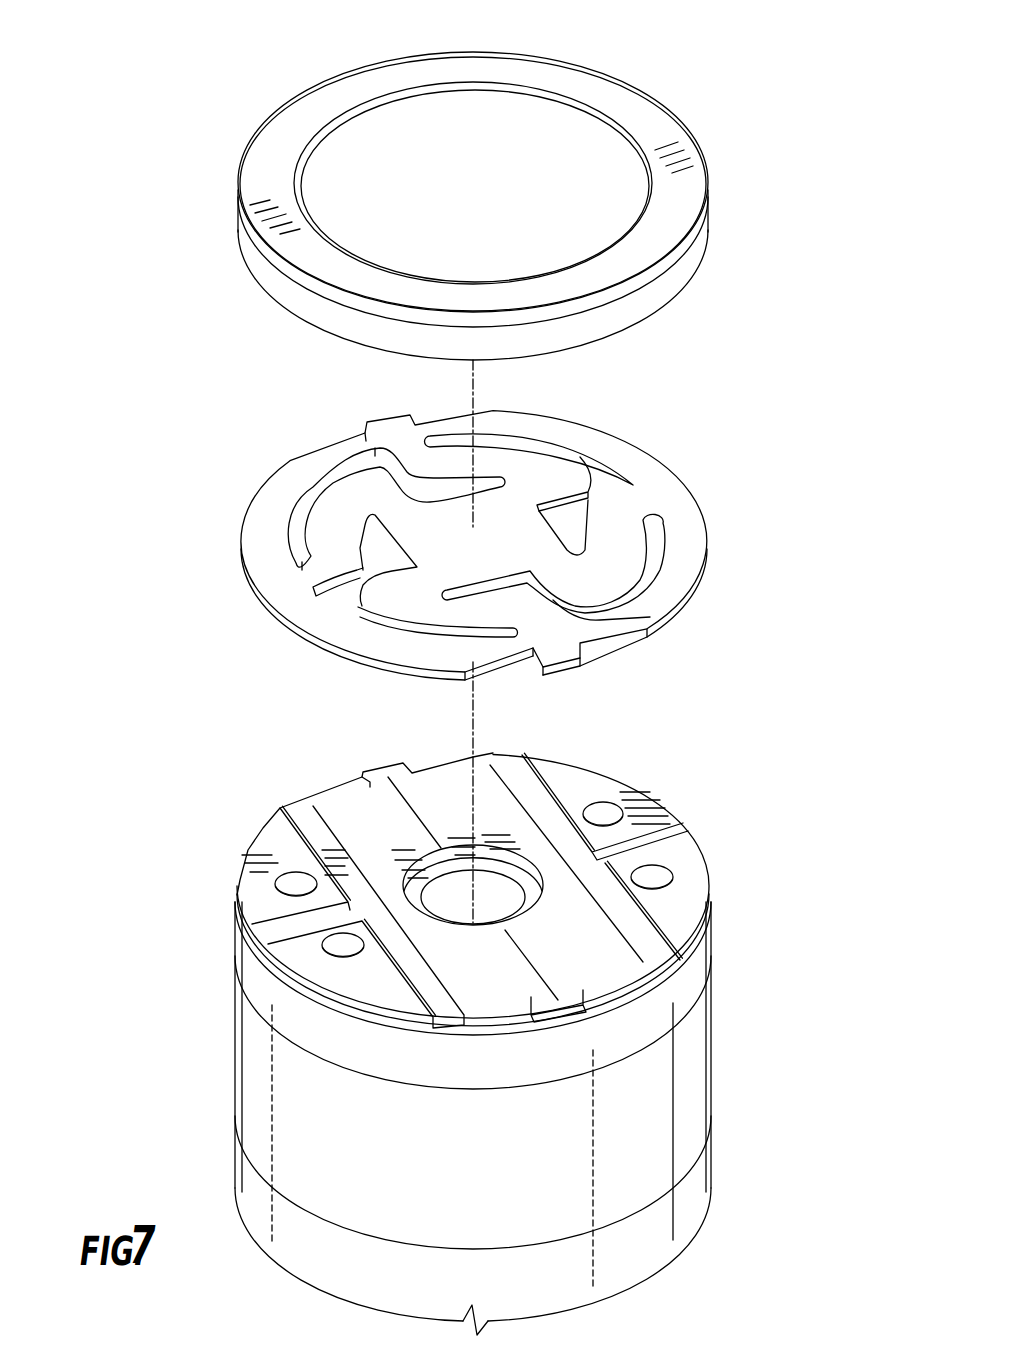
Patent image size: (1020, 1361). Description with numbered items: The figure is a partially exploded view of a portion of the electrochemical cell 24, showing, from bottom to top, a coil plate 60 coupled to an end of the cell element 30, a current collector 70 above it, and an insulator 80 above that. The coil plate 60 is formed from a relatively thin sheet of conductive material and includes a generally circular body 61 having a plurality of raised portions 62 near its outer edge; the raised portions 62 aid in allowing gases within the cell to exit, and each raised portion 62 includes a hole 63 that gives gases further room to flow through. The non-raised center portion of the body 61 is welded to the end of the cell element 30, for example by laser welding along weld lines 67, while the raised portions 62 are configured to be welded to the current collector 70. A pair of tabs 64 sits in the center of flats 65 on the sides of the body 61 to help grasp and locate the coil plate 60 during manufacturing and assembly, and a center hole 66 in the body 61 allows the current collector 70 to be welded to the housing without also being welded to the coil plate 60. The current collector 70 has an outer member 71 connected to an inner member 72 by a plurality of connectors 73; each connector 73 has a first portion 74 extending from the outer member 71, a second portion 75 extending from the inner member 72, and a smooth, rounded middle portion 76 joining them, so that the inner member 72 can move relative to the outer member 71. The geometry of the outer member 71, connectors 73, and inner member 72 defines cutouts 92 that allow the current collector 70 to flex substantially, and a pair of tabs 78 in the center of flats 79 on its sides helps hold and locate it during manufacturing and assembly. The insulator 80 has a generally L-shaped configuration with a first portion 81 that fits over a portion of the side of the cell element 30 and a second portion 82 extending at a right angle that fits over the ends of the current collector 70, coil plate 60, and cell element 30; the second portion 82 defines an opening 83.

The electrochemical cell 24 is at (150, 363).
The cell element 30 is at (682, 1095).
The coil plate 60 is at (516, 893).
The body 61 is at (352, 805).
The raised portions 62 is at (697, 877).
The hole 63 is at (663, 878).
The tabs 64 is at (385, 770).
The flats 65 is at (447, 763).
The center hole 66 is at (428, 867).
The weld lines 67 is at (633, 953).
The current collector 70 is at (516, 528).
The outer member 71 is at (615, 568).
The inner member 72 is at (452, 556).
The connectors 73 is at (650, 552).
The first portion 74 is at (628, 517).
The second portion 75 is at (640, 612).
The middle portion 76 is at (611, 551).
The tabs 78 is at (569, 661).
The flats 79 is at (490, 665).
The insulator 80 is at (504, 190).
The first portion 81 is at (710, 250).
The second portion 82 is at (681, 175).
The opening 83 is at (453, 87).
The cutouts 92 is at (347, 593).